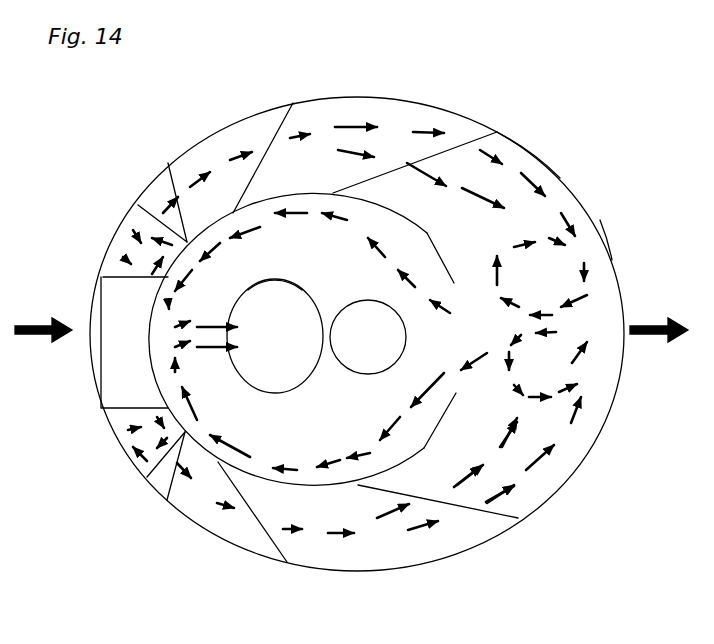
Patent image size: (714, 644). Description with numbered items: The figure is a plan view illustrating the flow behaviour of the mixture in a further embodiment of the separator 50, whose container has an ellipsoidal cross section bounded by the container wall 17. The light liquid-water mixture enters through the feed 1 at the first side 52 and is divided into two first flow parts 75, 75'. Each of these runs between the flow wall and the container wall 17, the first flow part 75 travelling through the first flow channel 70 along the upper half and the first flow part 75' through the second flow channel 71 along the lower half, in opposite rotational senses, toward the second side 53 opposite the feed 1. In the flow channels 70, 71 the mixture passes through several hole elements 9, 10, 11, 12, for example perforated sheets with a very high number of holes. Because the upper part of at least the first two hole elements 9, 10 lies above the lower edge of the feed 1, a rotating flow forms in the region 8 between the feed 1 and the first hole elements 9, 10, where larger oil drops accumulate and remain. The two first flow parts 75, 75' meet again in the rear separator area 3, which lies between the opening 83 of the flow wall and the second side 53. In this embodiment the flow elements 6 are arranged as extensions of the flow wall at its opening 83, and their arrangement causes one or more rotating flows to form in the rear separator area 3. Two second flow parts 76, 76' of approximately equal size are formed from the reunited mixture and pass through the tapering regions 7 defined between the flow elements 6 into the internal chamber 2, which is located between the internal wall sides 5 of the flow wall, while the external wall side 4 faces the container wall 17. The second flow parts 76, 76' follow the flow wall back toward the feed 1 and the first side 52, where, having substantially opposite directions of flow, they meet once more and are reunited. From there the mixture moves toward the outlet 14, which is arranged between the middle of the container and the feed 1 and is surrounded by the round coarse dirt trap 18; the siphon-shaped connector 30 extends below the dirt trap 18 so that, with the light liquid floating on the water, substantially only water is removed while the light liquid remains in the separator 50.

The feed 1 is at (96, 300).
The internal chamber 2 is at (214, 310).
The rear separator area 3 is at (598, 343).
The external wall side 4 is at (267, 192).
The internal wall side 5 is at (270, 197).
The flow element 6 is at (442, 238).
The tapering region 7 is at (462, 358).
The region 8 is at (152, 266).
The hole element 9 is at (140, 205).
The hole element 10 is at (180, 165).
The hole element 11 is at (273, 107).
The hole element 12 is at (488, 130).
The outlet 14 is at (286, 351).
The container wall 17 is at (527, 148).
The coarse dirt trap 18 is at (300, 285).
The connector 30 is at (380, 351).
The separator 50 is at (606, 156).
The first side 52 is at (101, 408).
The second side 53 is at (605, 238).
The first flow channel 70 is at (334, 170).
The second flow channel 71 is at (394, 561).
The first flow part 75 is at (256, 550).
The first flow part 75' is at (283, 122).
The second flow part 76 is at (366, 418).
The second flow part 76' is at (380, 270).
The opening 83 is at (470, 302).